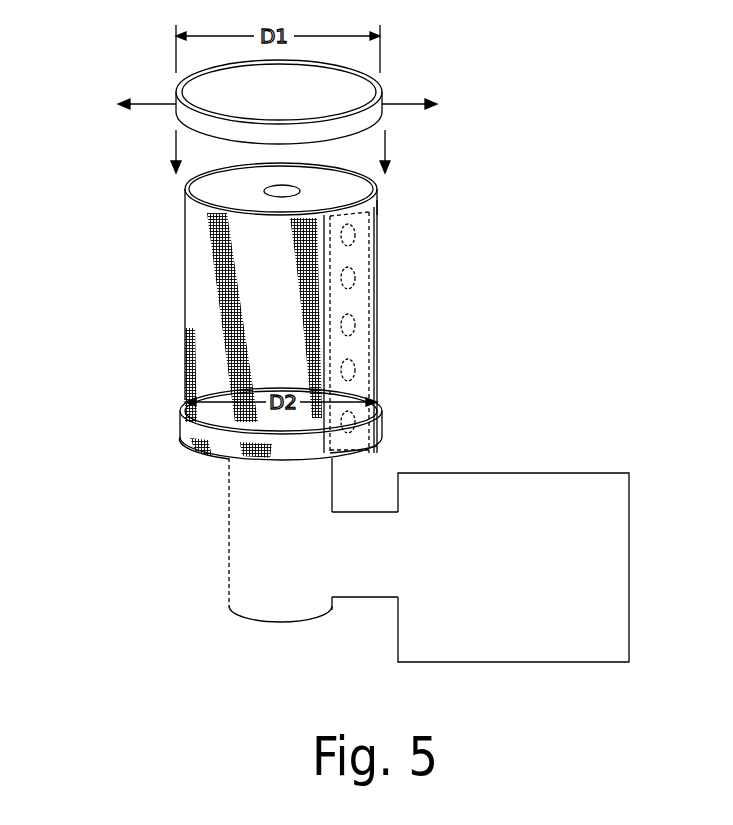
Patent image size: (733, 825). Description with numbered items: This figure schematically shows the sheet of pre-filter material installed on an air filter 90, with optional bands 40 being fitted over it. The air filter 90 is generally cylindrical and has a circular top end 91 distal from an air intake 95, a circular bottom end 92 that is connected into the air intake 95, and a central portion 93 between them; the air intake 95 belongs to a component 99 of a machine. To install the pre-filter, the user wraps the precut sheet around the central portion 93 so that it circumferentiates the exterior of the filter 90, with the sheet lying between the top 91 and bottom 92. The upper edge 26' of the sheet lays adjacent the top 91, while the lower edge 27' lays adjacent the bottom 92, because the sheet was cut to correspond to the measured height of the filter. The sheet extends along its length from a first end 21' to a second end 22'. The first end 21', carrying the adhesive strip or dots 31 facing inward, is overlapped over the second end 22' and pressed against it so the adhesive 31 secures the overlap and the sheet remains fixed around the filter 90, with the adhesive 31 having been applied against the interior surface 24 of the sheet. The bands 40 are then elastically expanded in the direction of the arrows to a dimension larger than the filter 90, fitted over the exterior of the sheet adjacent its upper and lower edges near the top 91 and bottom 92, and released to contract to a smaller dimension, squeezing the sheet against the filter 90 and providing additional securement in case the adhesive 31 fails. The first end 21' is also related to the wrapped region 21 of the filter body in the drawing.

The cylindrical body 21 is at (268, 299).
The first end 21' is at (170, 334).
The second end 22' is at (396, 330).
The interior surface 24 is at (208, 334).
The top edge 26' is at (427, 245).
The bottom edge 27' is at (386, 456).
The adhesive 31 is at (353, 327).
The bands 40 is at (380, 98).
The air filter 90 is at (183, 191).
The top end 91 is at (360, 192).
The bottom end 92 is at (195, 443).
The central portion 93 is at (252, 373).
The air intake 95 is at (247, 594).
The component 99 is at (608, 560).